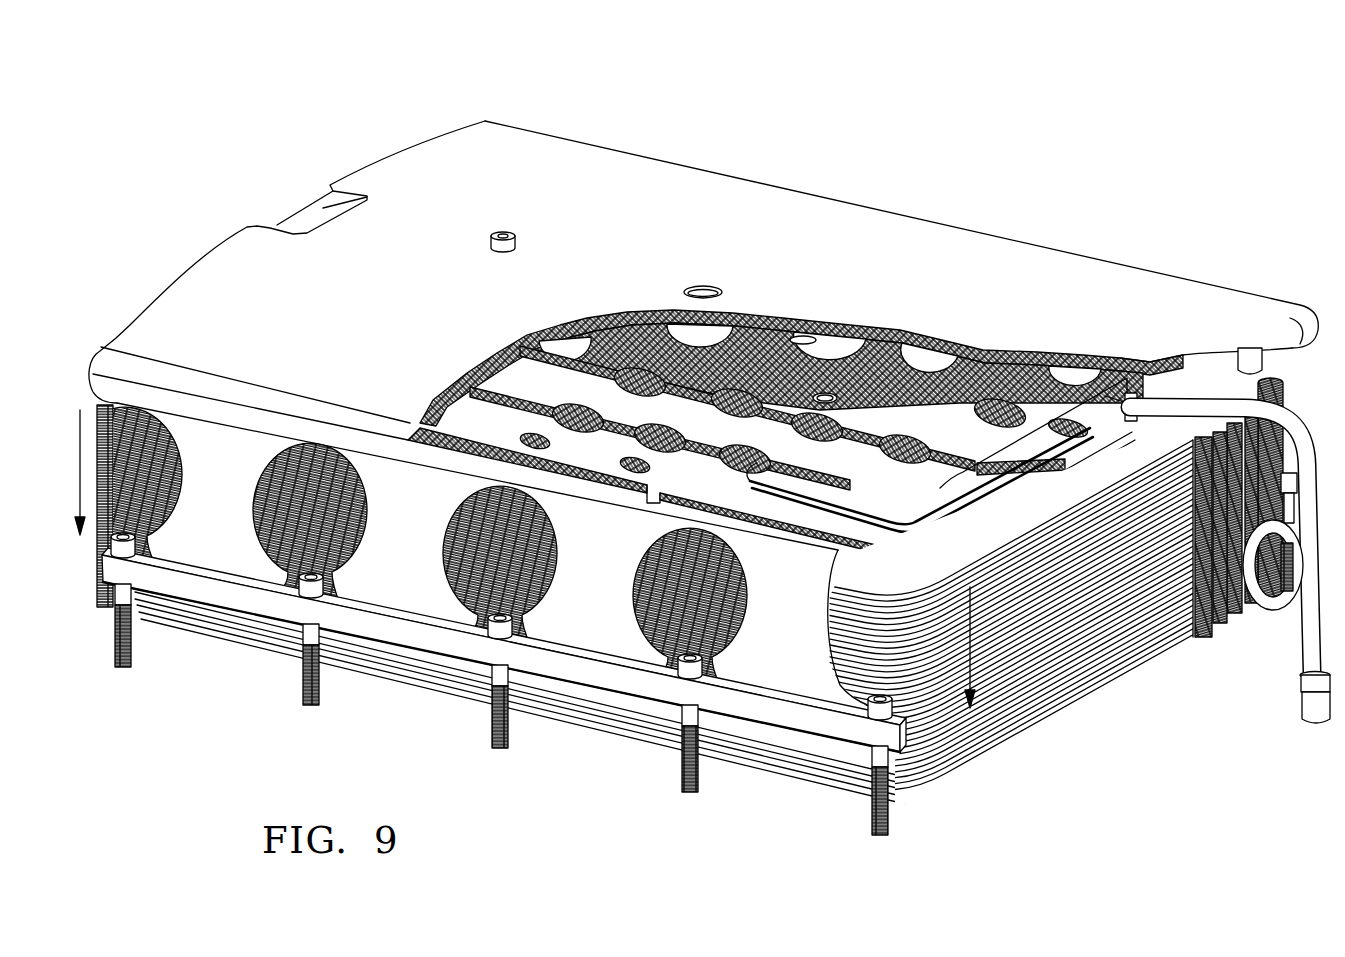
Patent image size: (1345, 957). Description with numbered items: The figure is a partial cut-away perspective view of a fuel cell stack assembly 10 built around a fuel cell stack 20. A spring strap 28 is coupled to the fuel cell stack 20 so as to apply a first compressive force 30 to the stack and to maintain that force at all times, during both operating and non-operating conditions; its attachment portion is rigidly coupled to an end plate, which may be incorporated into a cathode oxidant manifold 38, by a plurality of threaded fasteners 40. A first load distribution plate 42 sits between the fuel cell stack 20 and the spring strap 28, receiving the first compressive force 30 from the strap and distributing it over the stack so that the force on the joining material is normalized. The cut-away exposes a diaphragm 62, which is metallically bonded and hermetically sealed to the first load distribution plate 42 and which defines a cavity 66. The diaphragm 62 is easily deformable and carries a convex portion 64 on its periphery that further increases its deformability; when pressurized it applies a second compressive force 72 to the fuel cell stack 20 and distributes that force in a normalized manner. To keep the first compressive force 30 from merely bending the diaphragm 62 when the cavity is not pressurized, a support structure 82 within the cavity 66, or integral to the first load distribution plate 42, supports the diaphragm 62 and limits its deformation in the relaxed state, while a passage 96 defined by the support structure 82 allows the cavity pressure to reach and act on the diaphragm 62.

The fuel cell stack assembly 10 is at (1106, 214).
The fuel cell stack 20 is at (960, 727).
The spring strap 28 is at (552, 153).
The first compressive force 30 is at (80, 493).
The cathode oxidant manifold 38 is at (1120, 465).
The threaded fasteners 40 is at (684, 750).
The first load distribution plate 42 is at (1280, 335).
The diaphragm 62 is at (868, 488).
The convex portion 64 is at (975, 472).
The cavity 66 is at (770, 350).
The second compressive force 72 is at (973, 622).
The support structure 82 is at (575, 348).
The passage 96 is at (640, 462).